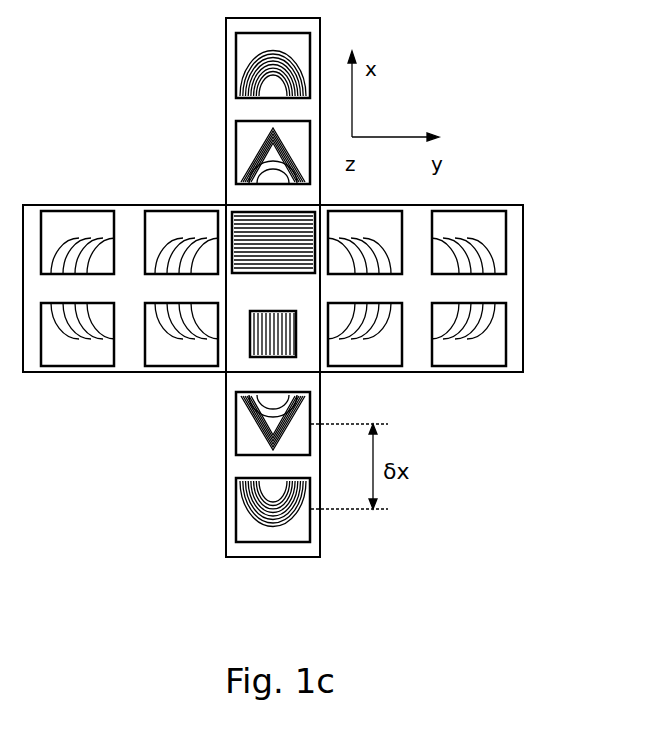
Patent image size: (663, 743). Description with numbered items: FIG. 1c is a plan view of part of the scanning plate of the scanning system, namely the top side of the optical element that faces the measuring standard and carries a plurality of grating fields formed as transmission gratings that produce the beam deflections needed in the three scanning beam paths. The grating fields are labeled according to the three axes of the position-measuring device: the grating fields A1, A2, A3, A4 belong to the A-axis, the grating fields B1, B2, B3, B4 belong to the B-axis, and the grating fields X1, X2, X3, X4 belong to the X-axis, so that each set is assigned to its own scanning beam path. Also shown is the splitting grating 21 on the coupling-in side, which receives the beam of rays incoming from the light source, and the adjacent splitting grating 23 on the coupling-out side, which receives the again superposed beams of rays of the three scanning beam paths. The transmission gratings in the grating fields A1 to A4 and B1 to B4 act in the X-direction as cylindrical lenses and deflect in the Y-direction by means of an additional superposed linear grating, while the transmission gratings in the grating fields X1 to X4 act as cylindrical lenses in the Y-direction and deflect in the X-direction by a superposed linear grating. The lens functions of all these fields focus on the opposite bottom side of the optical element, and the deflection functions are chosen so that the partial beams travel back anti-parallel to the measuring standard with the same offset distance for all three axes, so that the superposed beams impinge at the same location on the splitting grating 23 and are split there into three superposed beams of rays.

The splitting grating 21 is at (258, 342).
The splitting grating 23 is at (247, 223).
The grating field X1 is at (243, 528).
The grating field X2 is at (243, 442).
The grating field X3 is at (243, 145).
The grating field X4 is at (243, 53).
The grating field A1 is at (182, 335).
The grating field A2 is at (468, 335).
The grating field A3 is at (182, 242).
The grating field A4 is at (468, 242).
The grating field B1 is at (78, 335).
The grating field B2 is at (364, 335).
The grating field B3 is at (78, 242).
The grating field B4 is at (364, 242).